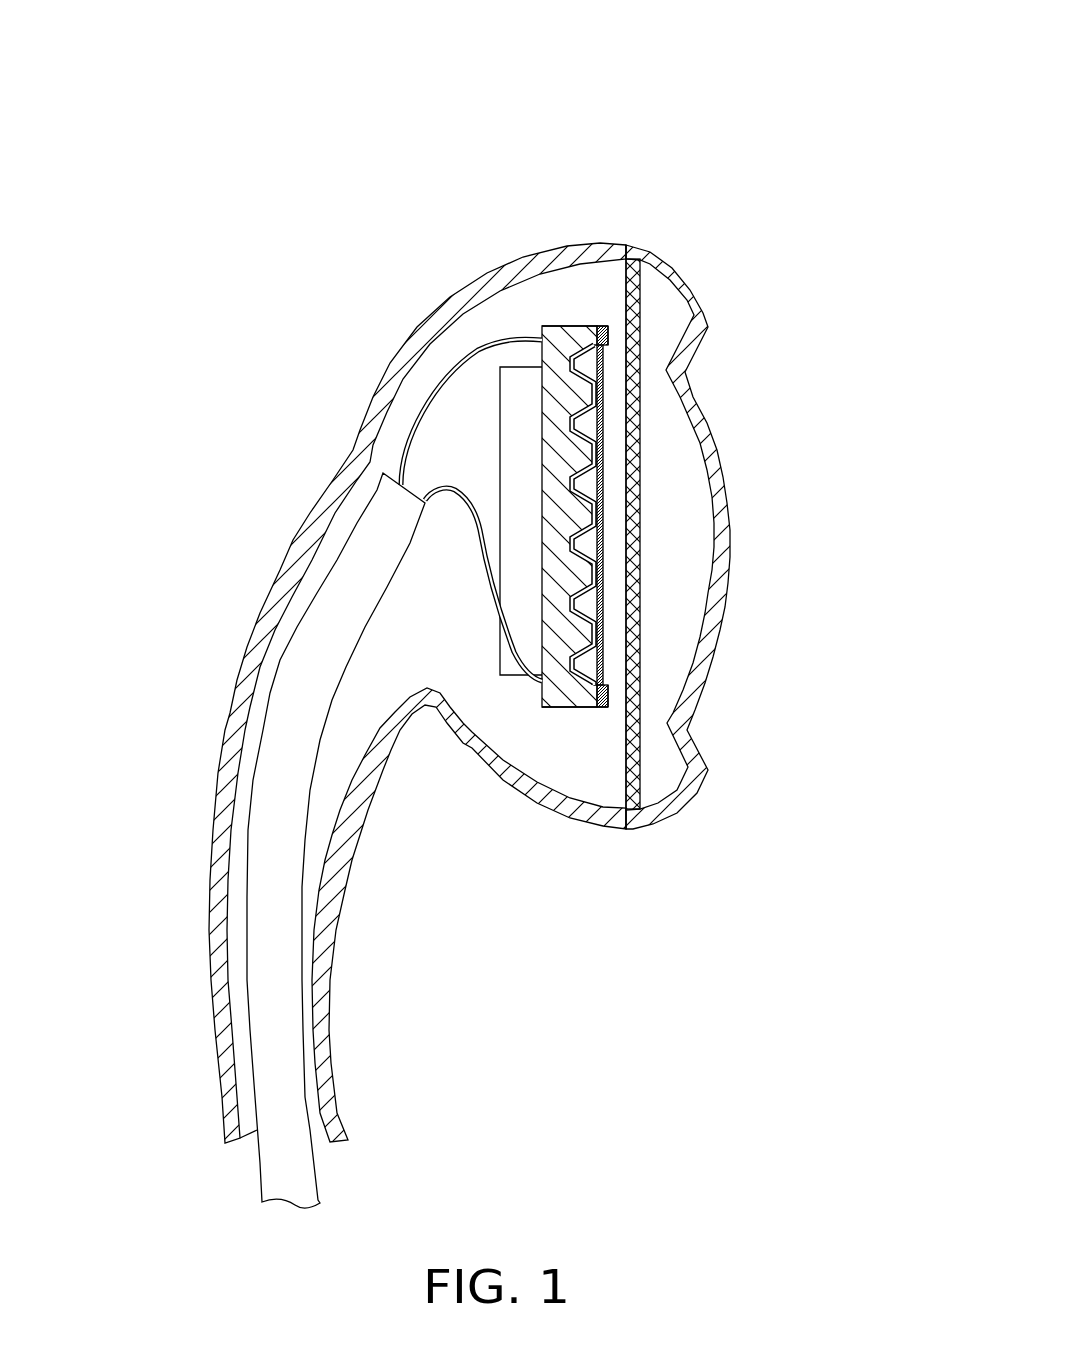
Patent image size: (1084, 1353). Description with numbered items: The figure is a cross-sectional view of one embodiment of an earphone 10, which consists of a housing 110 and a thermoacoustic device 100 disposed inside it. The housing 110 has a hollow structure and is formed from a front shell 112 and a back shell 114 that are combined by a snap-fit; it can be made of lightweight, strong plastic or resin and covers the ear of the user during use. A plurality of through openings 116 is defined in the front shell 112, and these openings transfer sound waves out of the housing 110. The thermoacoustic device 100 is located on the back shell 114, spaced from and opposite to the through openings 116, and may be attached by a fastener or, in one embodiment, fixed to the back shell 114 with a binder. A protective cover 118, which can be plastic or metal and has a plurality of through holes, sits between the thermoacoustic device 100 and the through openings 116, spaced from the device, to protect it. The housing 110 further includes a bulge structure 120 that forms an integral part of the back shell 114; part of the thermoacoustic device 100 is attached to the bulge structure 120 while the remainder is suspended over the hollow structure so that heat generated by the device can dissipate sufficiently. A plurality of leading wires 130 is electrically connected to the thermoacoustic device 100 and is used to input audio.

The earphone 10 is at (540, 57).
The housing 110 is at (670, 165).
The front shell 112 is at (648, 260).
The back shell 114 is at (550, 260).
The through openings 116 is at (713, 480).
The protective cover 118 is at (635, 393).
The thermoacoustic device 100 is at (612, 597).
The bulge structure 120 is at (518, 388).
The leading wires 130 is at (417, 422).